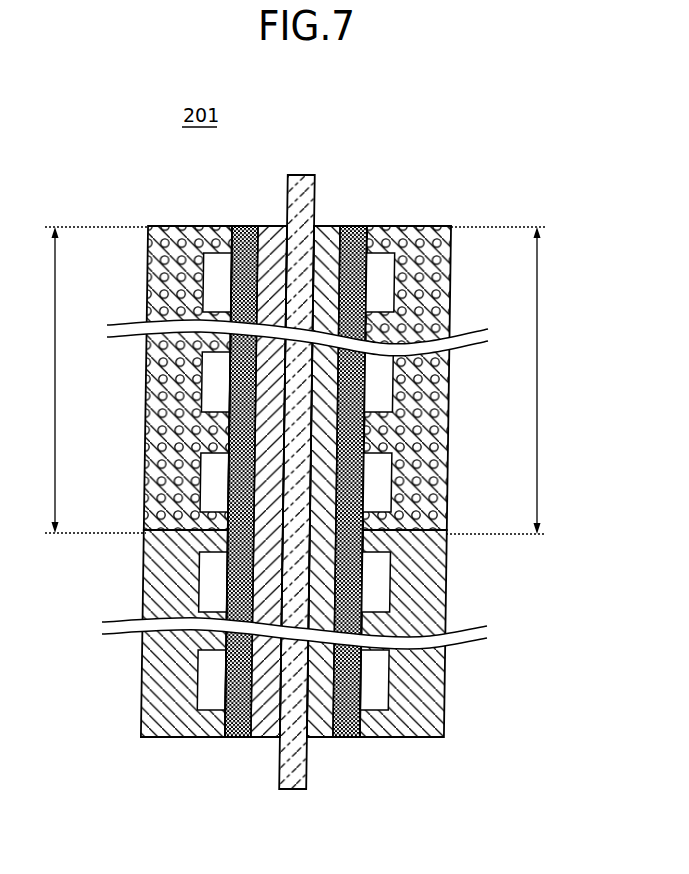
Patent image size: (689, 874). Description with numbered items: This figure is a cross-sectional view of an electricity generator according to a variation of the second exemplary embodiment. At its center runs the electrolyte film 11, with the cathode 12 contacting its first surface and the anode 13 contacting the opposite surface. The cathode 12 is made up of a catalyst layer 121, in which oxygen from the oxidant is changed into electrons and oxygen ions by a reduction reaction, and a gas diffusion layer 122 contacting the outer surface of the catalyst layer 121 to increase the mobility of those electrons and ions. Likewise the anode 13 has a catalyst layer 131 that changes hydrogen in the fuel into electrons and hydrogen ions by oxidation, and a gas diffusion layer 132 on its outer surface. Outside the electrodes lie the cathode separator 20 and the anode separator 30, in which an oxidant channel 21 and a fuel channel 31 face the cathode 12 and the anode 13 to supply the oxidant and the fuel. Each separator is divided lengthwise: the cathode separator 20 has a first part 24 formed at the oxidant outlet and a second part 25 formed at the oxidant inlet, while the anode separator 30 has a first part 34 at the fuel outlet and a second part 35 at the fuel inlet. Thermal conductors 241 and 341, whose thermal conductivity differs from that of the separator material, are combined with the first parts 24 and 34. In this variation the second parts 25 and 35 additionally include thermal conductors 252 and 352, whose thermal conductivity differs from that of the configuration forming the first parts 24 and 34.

The electrolyte film 11 is at (303, 175).
The cathode 12 is at (238, 818).
The catalyst layer 121 is at (265, 738).
The gas diffusion layer 122 is at (238, 738).
The anode 13 is at (420, 818).
The catalyst layer 131 is at (320, 738).
The gas diffusion layer 132 is at (347, 738).
The cathode separator 20 is at (166, 466).
The oxidant channel 21 is at (212, 384).
The first part 24 is at (136, 600).
The thermal conductor 241 is at (160, 680).
The second part 25 is at (87, 380).
The thermal conductor 252 is at (186, 290).
The anode separator 30 is at (428, 471).
The fuel channel 31 is at (386, 381).
The first part 34 is at (452, 603).
The thermal conductor 341 is at (426, 677).
The second part 35 is at (508, 380).
The thermal conductor 352 is at (427, 293).